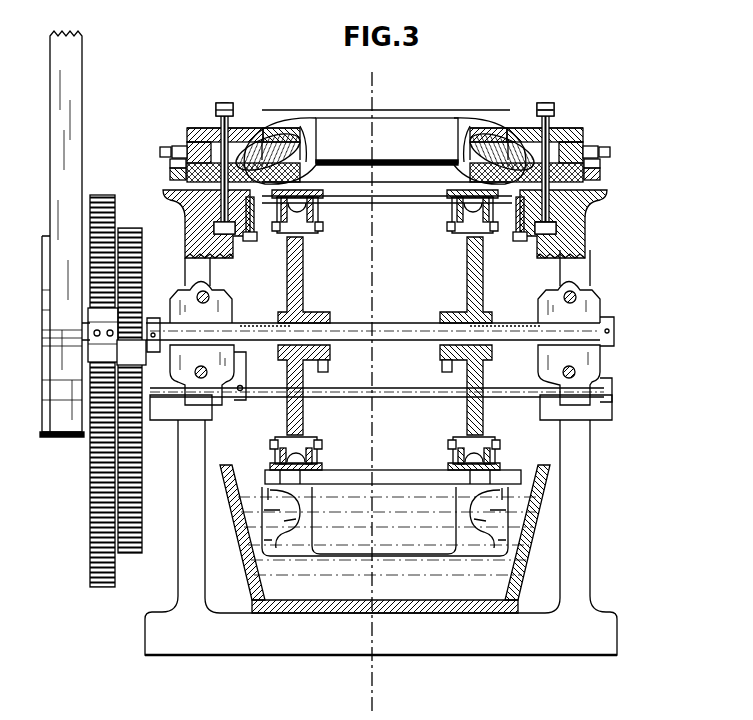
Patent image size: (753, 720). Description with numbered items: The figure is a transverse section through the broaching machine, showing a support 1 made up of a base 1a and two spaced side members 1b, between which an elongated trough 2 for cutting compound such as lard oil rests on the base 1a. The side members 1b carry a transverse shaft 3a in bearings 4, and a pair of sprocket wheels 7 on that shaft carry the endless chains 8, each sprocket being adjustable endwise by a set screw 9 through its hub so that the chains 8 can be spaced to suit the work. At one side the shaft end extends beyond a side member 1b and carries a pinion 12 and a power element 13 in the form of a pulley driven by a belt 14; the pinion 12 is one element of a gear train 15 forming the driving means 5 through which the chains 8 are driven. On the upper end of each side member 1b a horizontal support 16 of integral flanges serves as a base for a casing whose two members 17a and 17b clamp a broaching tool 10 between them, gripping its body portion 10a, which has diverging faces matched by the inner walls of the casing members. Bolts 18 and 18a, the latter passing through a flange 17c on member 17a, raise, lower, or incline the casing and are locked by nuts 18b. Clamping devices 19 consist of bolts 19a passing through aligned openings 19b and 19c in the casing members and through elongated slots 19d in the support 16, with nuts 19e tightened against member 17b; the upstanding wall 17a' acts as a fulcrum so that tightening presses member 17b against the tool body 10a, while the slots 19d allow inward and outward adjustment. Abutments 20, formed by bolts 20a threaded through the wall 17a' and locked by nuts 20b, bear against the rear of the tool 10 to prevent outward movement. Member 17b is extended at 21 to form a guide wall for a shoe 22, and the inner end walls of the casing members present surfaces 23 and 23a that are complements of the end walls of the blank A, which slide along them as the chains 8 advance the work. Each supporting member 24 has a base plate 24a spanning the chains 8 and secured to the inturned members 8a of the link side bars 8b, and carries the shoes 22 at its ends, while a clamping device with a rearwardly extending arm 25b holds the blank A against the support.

The support 1 is at (168, 612).
The base 1a is at (462, 656).
The side members 1b is at (178, 528).
The trough 2 is at (372, 66).
The transverse shaft 3a is at (402, 332).
The bearings 4 is at (600, 312).
The driving means 5 is at (106, 390).
The sprocket wheels 7 is at (304, 300).
The endless chains 8 is at (284, 236).
The inturned members 8a is at (306, 232).
The side bars 8b is at (306, 240).
The set screw 9 is at (328, 366).
The broaching tool 10 is at (305, 130).
The body portion 10a is at (268, 130).
The pinion 12 is at (182, 316).
The power element 13 is at (44, 437).
The belt 14 is at (58, 172).
The gear train 15 is at (90, 530).
The horizontal support 16 is at (172, 210).
The casing member 17a is at (392, 189).
The upstanding wall 17a' is at (403, 130).
The casing member 17b is at (205, 128).
The flange 17c is at (187, 183).
The bolts 18 is at (250, 242).
The bolts 18a is at (170, 186).
The nut 18b is at (170, 168).
The clamping devices 19 is at (220, 128).
The bolts 19a is at (224, 100).
The opening 19b is at (236, 128).
The opening 19c is at (212, 128).
The elongated slots 19d is at (600, 246).
The nut 19e is at (568, 118).
The abutments 20 is at (588, 112).
The bolts 20a is at (160, 150).
The nuts 20b is at (600, 152).
The extended portion 21 is at (262, 128).
The shoe 22 is at (262, 560).
The surface 23 is at (462, 175).
The surface 23a is at (280, 145).
The supporting member 24 is at (313, 518).
The base plate 24a is at (408, 112).
The arm 25b is at (328, 172).
The blank A is at (387, 141).